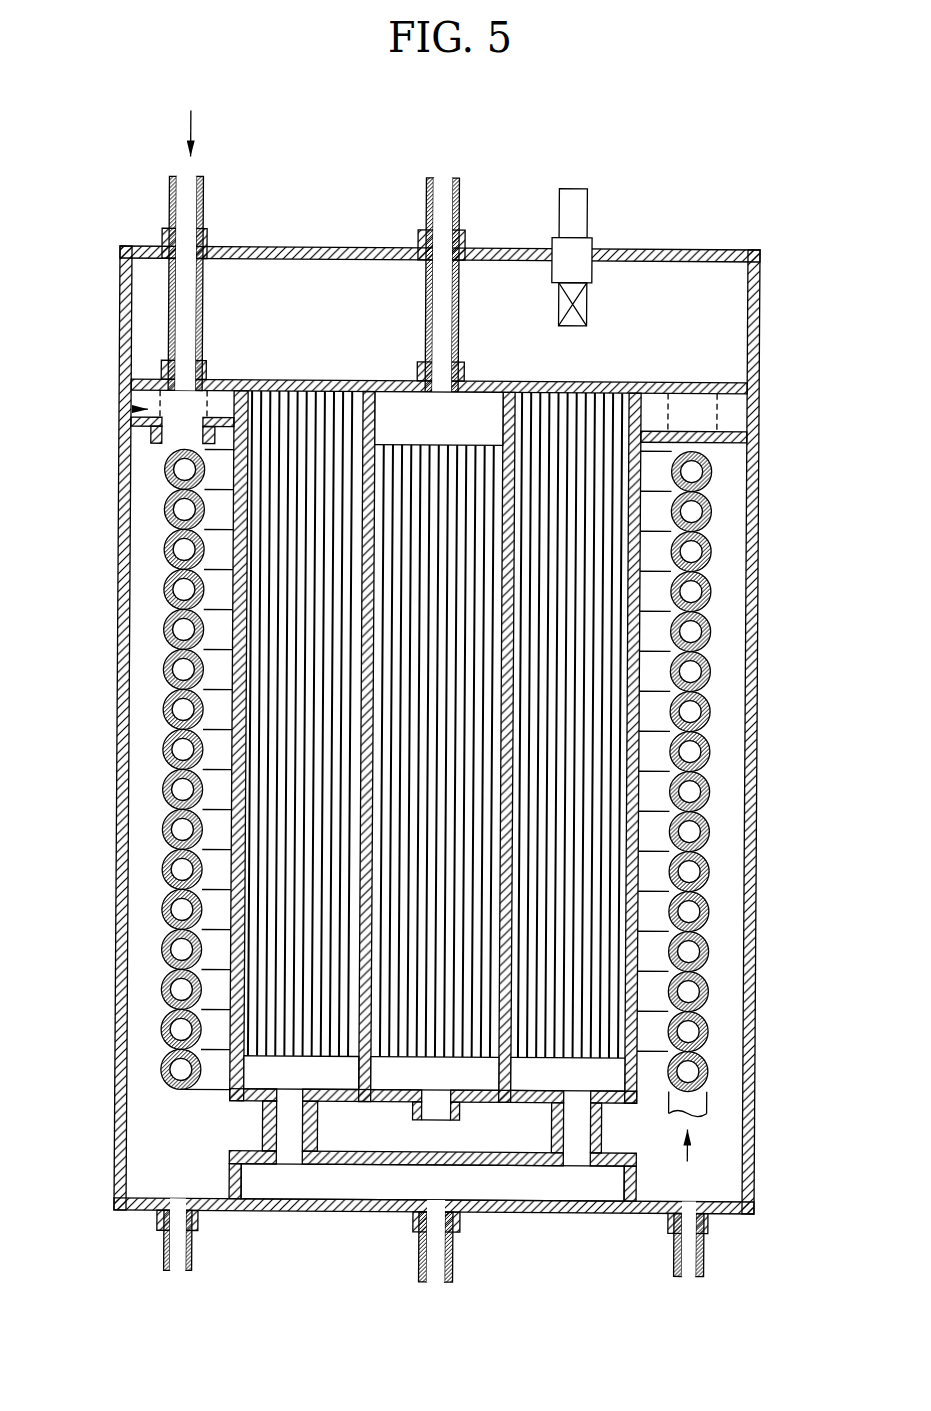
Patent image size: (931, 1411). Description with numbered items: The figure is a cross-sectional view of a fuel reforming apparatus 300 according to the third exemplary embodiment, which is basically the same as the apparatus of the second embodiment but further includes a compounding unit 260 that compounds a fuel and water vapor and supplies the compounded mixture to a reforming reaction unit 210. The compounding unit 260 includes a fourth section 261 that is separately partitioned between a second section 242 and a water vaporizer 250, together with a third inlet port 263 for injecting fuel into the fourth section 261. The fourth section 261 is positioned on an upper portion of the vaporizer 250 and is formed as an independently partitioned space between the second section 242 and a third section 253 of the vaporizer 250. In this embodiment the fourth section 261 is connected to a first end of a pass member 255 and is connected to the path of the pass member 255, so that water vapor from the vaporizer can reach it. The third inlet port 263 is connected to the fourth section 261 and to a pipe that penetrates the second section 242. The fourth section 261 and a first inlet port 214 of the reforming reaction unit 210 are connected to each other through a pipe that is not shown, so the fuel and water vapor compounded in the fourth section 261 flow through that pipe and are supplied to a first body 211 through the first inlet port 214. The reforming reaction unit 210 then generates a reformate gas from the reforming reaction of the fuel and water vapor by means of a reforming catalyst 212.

The fuel reforming apparatus 300 is at (466, 147).
The water vaporizer 250 is at (110, 901).
The second section 242 is at (313, 280).
The third inlet port 263 is at (160, 371).
The compounding unit 260 is at (115, 403).
The fourth section 261 is at (122, 414).
The reforming reaction unit 210 is at (355, 792).
The reforming catalyst 212 is at (489, 872).
The first body 211 is at (513, 915).
The first inlet port 214 is at (414, 1112).
The pass member 255 is at (165, 600).
The third section 253 is at (153, 955).